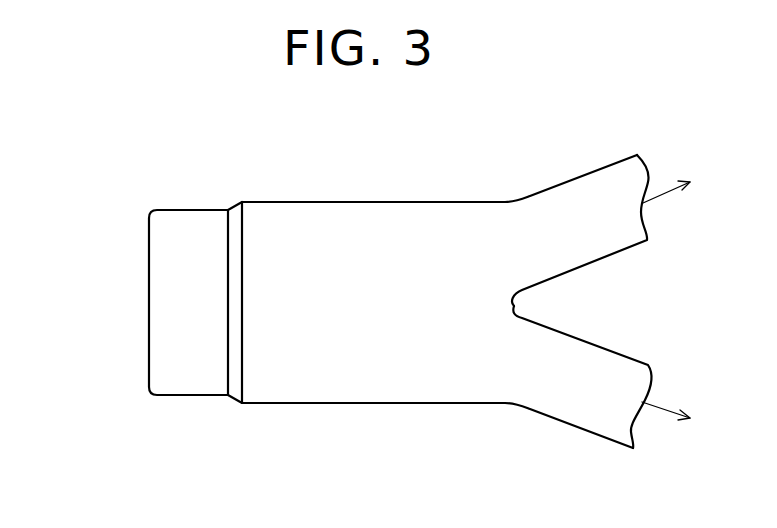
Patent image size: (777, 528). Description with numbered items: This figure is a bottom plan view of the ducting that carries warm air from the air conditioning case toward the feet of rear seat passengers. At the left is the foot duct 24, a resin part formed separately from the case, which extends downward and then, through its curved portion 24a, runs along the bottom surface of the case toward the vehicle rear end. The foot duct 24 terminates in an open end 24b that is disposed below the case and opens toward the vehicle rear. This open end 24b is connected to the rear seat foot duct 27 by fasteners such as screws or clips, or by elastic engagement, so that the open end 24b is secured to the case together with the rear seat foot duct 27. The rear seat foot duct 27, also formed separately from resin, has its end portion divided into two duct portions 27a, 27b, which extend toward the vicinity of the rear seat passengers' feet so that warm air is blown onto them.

The foot duct 24 is at (147, 282).
The curved portion 24a is at (172, 336).
The open end 24b is at (228, 358).
The rear seat foot duct 27 is at (468, 317).
The duct portion 27a is at (585, 253).
The duct portion 27b is at (582, 355).